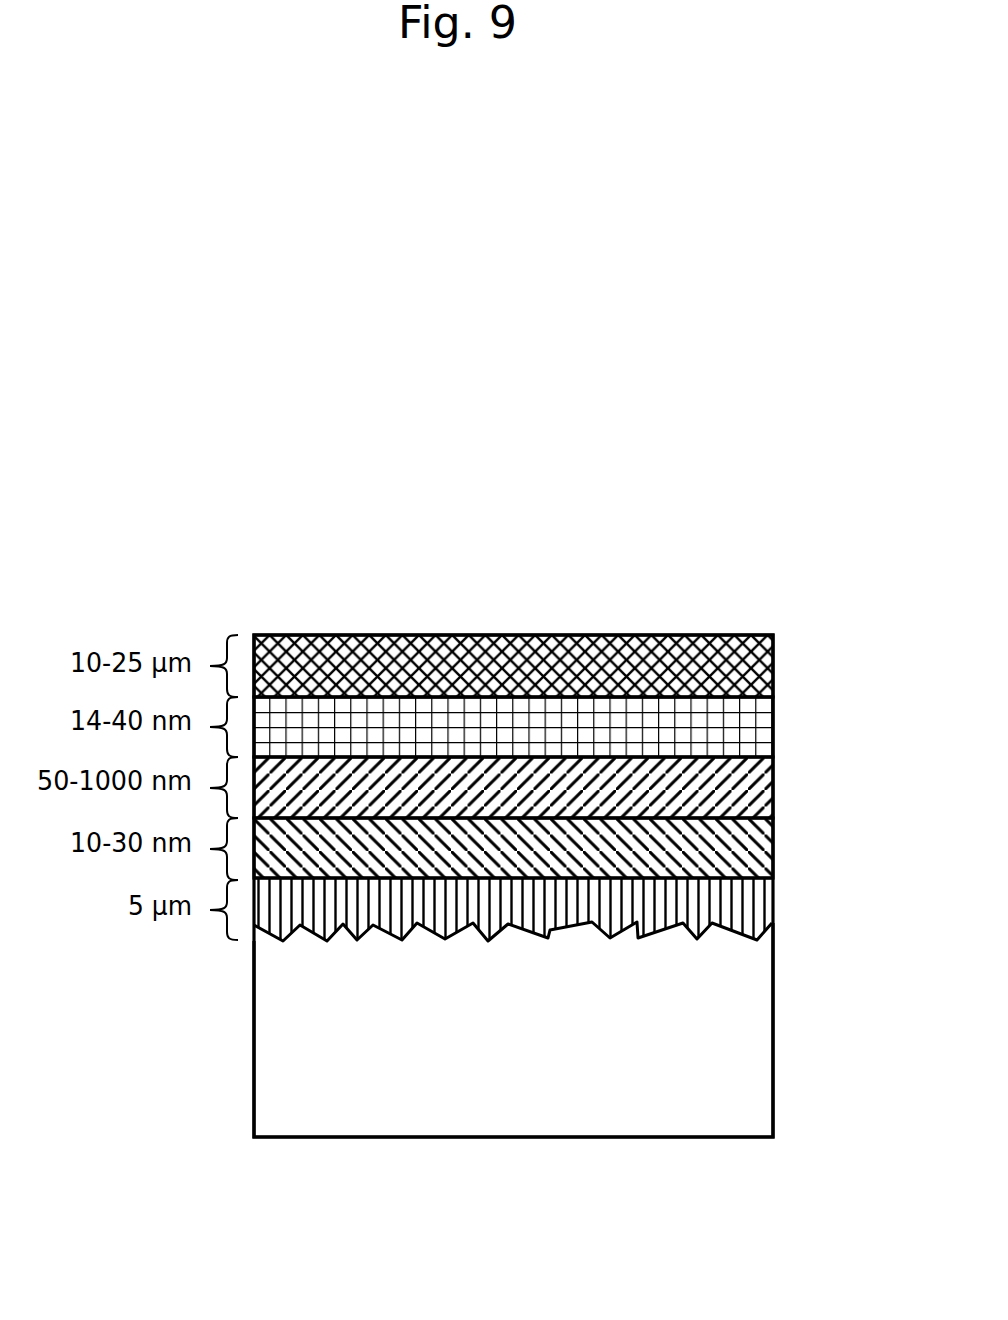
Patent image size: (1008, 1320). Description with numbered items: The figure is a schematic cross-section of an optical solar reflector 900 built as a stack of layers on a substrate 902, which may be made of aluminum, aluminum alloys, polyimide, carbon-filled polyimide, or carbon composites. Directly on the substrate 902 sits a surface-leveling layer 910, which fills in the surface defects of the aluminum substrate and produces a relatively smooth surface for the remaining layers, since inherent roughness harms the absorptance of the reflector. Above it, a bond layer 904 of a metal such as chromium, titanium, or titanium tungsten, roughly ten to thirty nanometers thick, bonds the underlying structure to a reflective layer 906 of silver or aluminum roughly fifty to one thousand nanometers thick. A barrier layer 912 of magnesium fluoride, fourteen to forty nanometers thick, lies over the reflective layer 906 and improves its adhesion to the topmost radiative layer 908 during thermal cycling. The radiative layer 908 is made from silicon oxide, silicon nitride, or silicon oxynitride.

The optical solar reflector 900 is at (480, 499).
The substrate 902 is at (773, 1028).
The bond layer 904 is at (773, 842).
The reflective layer 906 is at (773, 780).
The radiative layer 908 is at (773, 660).
The surface-leveling layer 910 is at (773, 905).
The barrier layer 912 is at (773, 722).